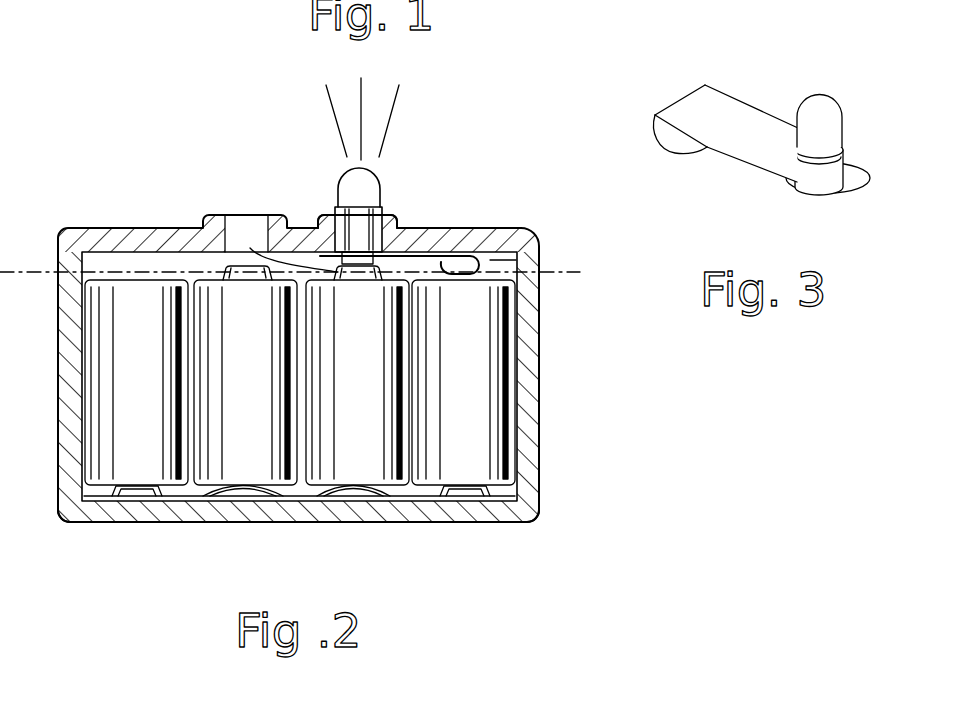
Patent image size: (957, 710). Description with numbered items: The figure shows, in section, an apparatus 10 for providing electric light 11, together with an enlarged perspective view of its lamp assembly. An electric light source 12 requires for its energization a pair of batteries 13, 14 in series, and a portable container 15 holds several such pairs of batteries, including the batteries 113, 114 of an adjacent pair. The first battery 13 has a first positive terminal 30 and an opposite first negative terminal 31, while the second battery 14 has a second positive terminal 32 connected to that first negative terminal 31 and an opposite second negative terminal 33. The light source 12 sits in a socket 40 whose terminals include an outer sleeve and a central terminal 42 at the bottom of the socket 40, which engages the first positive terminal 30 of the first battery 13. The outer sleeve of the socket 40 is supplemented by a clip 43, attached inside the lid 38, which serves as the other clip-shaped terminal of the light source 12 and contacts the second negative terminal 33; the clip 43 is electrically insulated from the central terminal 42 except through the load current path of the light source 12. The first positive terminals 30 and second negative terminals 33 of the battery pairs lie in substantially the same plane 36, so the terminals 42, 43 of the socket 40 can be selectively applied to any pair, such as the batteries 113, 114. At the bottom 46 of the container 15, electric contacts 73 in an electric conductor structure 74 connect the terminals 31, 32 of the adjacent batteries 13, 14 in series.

In FIG. 2, the apparatus 10 is at (548, 413).
In FIG. 2, the electric light 11 is at (393, 128).
In FIG. 2, the electric light source 12 is at (381, 187).
In FIG. 3, the electric light source 12 is at (818, 95).
In FIG. 2, the first battery 13 is at (372, 384).
In FIG. 2, the second battery 14 is at (476, 384).
In FIG. 2, the portable container 15 is at (541, 490).
In FIG. 2, the first positive terminal 30 is at (252, 248).
In FIG. 2, the first negative terminal 31 is at (288, 522).
In FIG. 2, the second positive terminal 32 is at (466, 488).
In FIG. 2, the second negative terminal 33 is at (507, 260).
In FIG. 2, the plane 36 is at (557, 274).
In FIG. 2, the lid 38 is at (132, 228).
In FIG. 2, the socket 40 is at (355, 223).
In FIG. 3, the socket 40 is at (812, 175).
In FIG. 2, the central terminal 42 is at (410, 228).
In FIG. 2, the clip 43 is at (490, 253).
In FIG. 3, the clip 43 is at (712, 112).
In FIG. 2, the bottom 46 is at (97, 523).
In FIG. 2, the electric contacts 73 is at (345, 522).
In FIG. 2, the electric conductor structure 74 is at (173, 522).
In FIG. 2, the battery 113 is at (261, 384).
In FIG. 2, the battery 114 is at (155, 384).